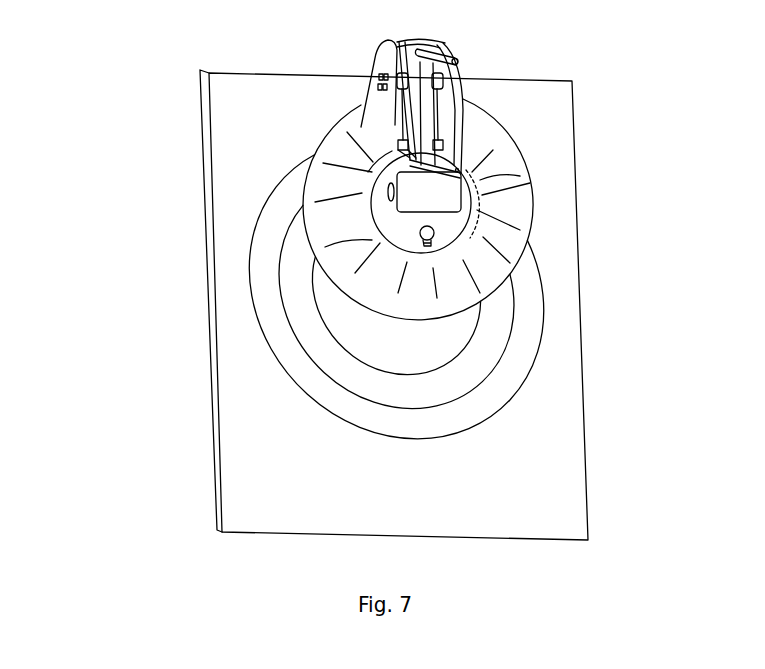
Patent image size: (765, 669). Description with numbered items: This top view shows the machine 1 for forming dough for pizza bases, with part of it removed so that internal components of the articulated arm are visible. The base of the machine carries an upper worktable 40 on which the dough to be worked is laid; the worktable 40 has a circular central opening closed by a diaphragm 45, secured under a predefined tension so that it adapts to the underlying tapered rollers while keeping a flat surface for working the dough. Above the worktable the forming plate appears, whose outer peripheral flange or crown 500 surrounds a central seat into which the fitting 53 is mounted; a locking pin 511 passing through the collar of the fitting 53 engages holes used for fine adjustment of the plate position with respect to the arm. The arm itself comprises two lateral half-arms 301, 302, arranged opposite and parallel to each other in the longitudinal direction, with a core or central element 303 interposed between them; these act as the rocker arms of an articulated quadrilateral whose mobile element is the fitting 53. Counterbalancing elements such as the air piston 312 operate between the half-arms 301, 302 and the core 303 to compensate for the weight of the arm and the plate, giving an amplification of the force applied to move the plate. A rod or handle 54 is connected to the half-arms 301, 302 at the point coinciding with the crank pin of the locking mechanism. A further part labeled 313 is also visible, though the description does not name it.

The machine for forming dough 1 is at (148, 217).
The upper worktable 40 is at (567, 493).
The diaphragm 45 is at (462, 334).
The outer peripheral flange or crown 500 is at (521, 208).
The fitting 53 is at (390, 218).
The locking pin 511 is at (427, 243).
The lateral half-arm 302 is at (388, 55).
The counterbalancing element 312 is at (407, 113).
The lateral half-arm 301 is at (460, 88).
The actuator arm 313 is at (443, 112).
The core or central element 303 is at (437, 155).
The rod or handle 54 is at (450, 60).